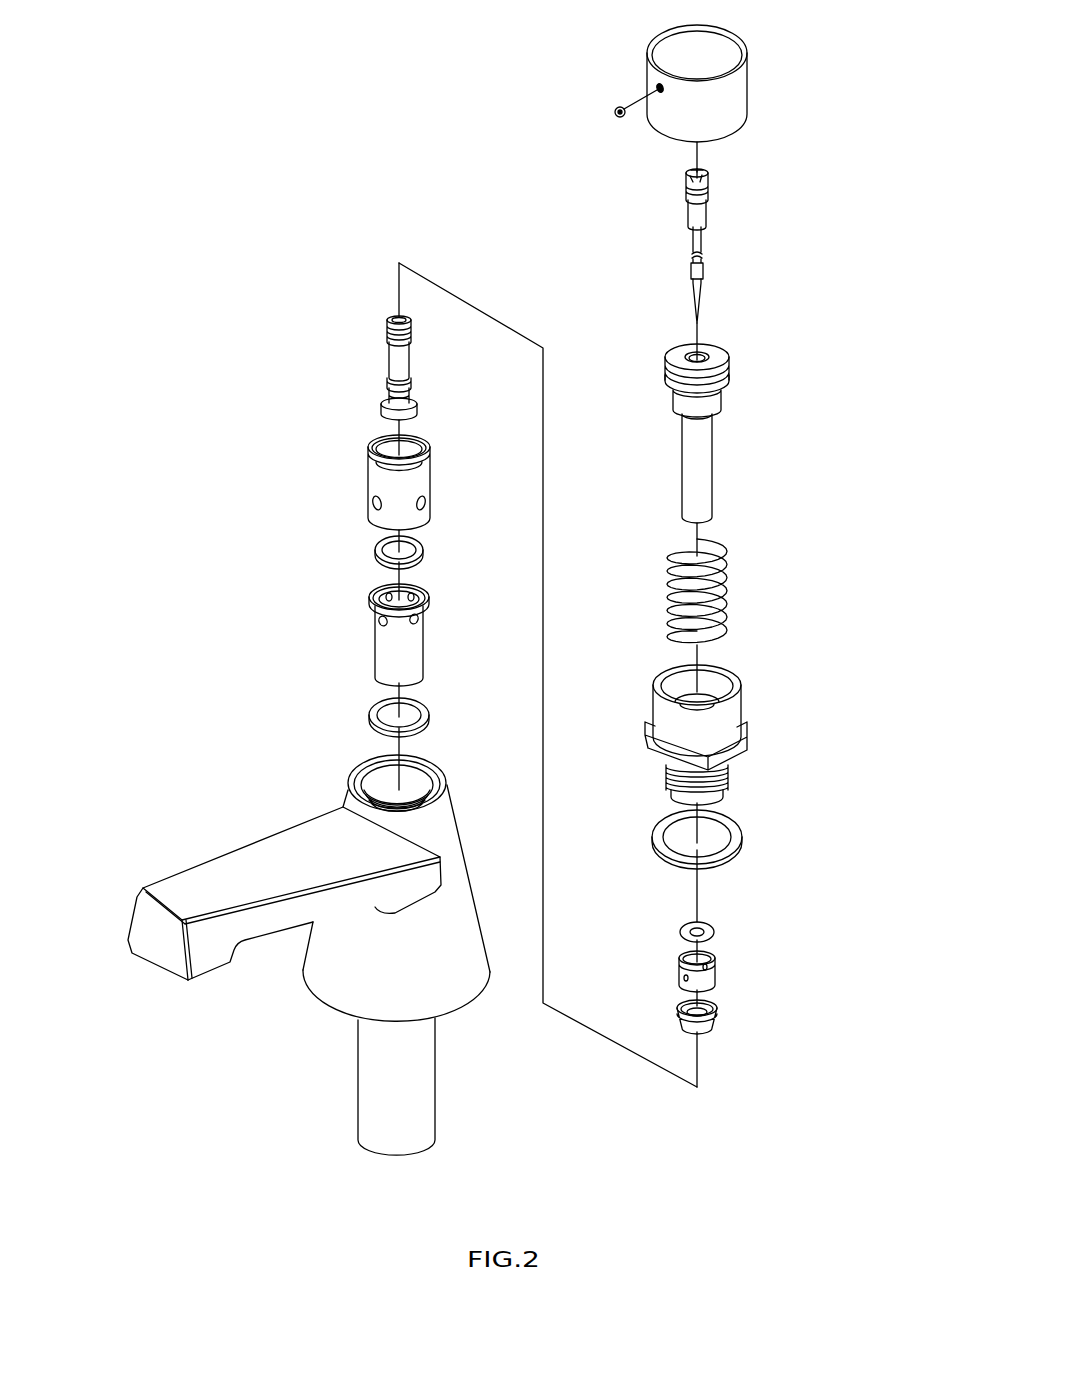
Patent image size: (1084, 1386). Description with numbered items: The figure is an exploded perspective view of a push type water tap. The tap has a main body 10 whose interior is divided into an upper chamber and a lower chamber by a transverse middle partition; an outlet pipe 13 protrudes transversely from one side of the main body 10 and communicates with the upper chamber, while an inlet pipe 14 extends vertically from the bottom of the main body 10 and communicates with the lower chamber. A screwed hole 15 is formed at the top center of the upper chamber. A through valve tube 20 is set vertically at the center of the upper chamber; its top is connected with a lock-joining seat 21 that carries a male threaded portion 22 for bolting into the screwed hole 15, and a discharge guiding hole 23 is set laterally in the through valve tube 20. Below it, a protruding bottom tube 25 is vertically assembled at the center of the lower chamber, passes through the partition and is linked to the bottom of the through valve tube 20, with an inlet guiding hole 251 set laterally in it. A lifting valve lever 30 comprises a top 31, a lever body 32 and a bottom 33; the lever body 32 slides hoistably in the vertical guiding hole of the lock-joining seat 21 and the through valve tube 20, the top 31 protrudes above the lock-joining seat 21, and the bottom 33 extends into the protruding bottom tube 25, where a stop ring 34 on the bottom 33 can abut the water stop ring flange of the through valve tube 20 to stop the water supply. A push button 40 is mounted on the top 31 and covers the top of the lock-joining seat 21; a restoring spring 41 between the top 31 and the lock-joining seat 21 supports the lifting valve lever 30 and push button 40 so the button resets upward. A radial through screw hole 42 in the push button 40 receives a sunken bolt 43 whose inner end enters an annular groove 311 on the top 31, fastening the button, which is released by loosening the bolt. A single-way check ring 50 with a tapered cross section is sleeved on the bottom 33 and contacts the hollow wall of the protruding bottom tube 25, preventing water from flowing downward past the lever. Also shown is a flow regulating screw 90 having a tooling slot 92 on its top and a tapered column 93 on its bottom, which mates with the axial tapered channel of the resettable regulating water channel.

The main body 10 is at (319, 946).
The outlet pipe 13 is at (253, 867).
The inlet pipe 14 is at (427, 1065).
The screwed hole 15 is at (377, 778).
The through valve tube 20 is at (368, 477).
The lock-joining seat 21 is at (742, 711).
The male threaded portion 22 is at (731, 776).
The discharge guiding hole 23 is at (373, 502).
The protruding bottom tube 25 is at (382, 641).
The inlet guiding hole 251 is at (374, 623).
The lifting valve lever 30 is at (758, 421).
The top 31 is at (722, 352).
The annular groove 311 is at (725, 383).
The lever body 32 is at (383, 355).
The bottom 33 is at (415, 408).
The stop ring 34 is at (714, 930).
The push button 40 is at (748, 82).
The restoring spring 41 is at (730, 590).
The radial through screw hole 42 is at (657, 88).
The sunken bolt 43 is at (612, 112).
The single-way check ring 50 is at (713, 1022).
The flow regulating screw 90 is at (732, 238).
The tooling slot 92 is at (707, 180).
The tapered column 93 is at (690, 298).